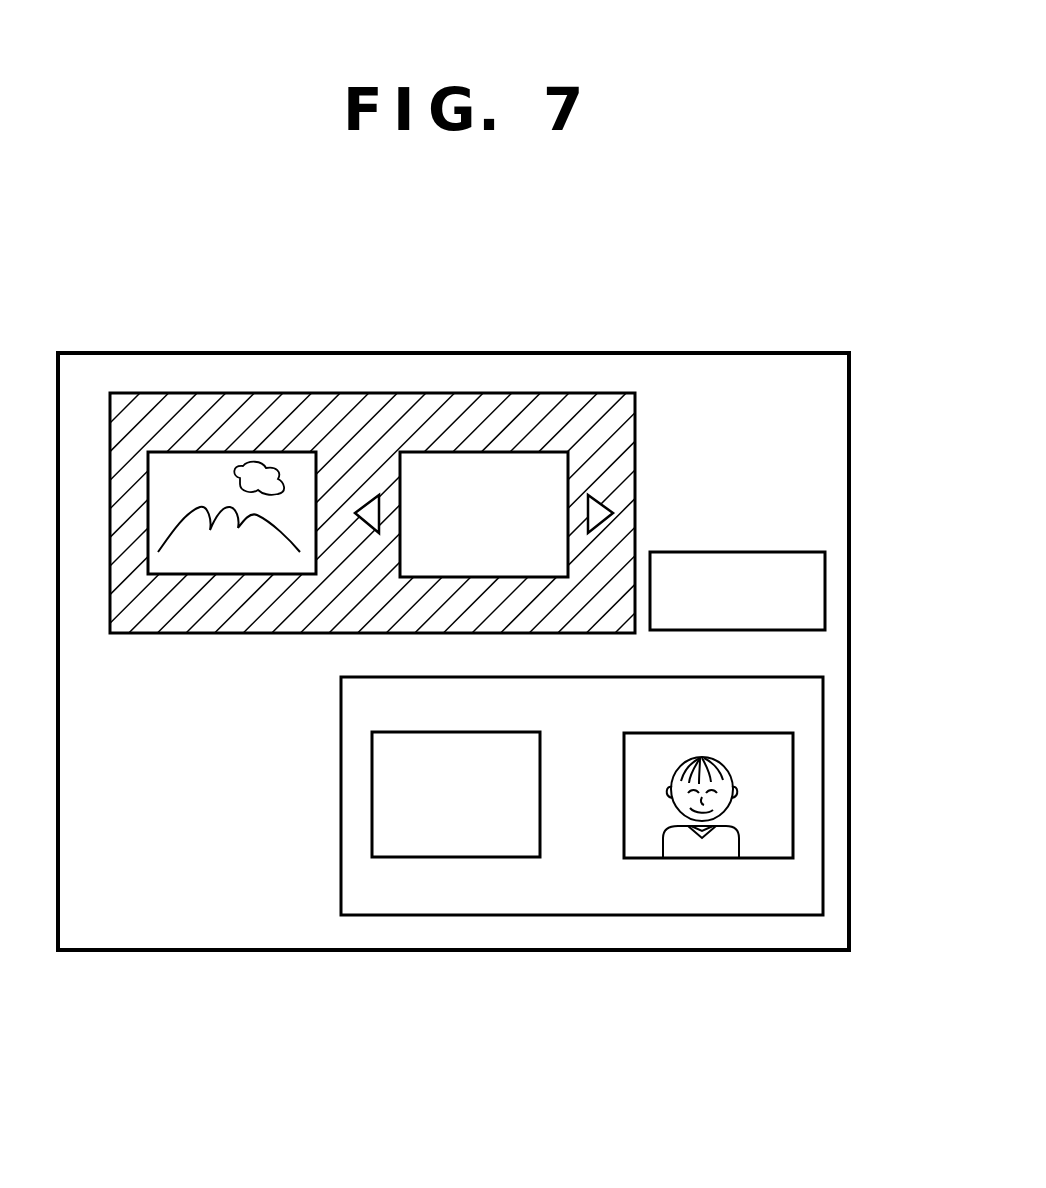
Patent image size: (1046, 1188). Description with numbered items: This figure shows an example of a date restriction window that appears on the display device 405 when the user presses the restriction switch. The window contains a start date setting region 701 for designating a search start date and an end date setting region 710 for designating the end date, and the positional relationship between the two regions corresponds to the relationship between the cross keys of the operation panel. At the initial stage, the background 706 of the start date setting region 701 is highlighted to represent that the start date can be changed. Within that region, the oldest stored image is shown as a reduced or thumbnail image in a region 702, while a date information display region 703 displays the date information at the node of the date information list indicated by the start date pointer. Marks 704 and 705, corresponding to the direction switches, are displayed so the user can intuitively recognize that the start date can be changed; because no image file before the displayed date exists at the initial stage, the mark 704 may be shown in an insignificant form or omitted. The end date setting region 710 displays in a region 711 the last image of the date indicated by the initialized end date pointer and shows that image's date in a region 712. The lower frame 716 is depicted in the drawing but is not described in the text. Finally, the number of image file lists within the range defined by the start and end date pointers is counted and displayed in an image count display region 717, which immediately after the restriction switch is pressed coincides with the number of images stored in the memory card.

The display device 405 is at (760, 352).
The start date setting region 701 is at (442, 500).
The image region 702 is at (229, 452).
The date information display region 703 is at (512, 452).
The mark 704 is at (370, 525).
The mark 705 is at (605, 509).
The background 706 is at (161, 620).
The end date setting region 710 is at (823, 713).
The image region 711 is at (702, 858).
The date display region 712 is at (457, 858).
The lower display frame 716 is at (358, 881).
The image count display region 717 is at (825, 578).